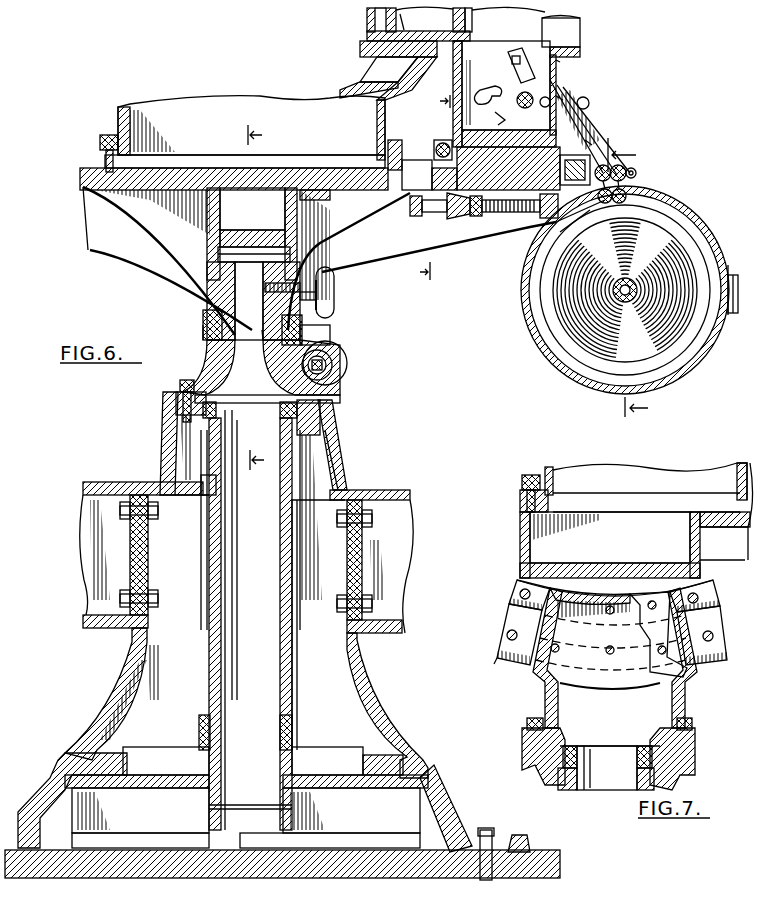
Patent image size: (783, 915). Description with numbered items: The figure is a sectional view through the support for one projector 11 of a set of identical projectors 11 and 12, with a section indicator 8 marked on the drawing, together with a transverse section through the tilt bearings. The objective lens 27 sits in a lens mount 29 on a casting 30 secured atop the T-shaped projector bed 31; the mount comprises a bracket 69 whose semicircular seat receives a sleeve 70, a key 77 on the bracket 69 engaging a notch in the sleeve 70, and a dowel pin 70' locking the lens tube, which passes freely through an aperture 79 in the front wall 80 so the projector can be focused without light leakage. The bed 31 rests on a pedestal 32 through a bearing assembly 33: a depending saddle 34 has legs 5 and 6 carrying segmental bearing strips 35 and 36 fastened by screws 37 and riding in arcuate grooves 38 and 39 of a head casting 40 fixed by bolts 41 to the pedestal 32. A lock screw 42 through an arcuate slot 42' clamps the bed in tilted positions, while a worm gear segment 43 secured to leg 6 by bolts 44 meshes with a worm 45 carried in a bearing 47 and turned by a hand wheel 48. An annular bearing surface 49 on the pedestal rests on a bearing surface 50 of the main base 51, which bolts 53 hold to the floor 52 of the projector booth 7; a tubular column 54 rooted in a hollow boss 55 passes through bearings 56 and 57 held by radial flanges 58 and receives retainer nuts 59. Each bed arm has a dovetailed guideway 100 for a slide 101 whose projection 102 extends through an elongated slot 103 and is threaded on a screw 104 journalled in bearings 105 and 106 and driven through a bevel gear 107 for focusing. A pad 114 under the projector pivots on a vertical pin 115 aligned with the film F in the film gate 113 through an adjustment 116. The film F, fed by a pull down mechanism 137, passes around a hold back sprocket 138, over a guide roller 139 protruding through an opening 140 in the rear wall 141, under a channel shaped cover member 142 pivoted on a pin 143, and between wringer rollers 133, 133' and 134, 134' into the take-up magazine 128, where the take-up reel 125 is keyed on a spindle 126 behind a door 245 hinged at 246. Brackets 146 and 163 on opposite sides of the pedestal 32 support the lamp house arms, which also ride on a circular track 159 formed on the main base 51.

In FIG. 6, the saddle leg 5 is at (203, 333).
In FIG. 7, the saddle leg 5 is at (500, 654).
In FIG. 6, the saddle leg 6 is at (275, 338).
In FIG. 6, the projector booth 7 is at (261, 297).
In FIG. 6, the section line 8 is at (429, 186).
In FIG. 6, the projector 11 is at (570, 78).
In FIG. 6, the projector 12 is at (638, 277).
In FIG. 6, the objective lens 27 is at (367, 14).
In FIG. 6, the lens mount 29 is at (364, 58).
In FIG. 6, the casting 30 is at (343, 132).
In FIG. 7, the casting 30 is at (747, 482).
In FIG. 6, the projector bed 31 is at (84, 190).
In FIG. 7, the projector bed 31 is at (742, 560).
In FIG. 6, the pedestal 32 is at (162, 448).
In FIG. 7, the pedestal 32 is at (697, 762).
In FIG. 7, the bearing assembly 33 is at (728, 624).
In FIG. 6, the saddle 34 is at (306, 262).
In FIG. 7, the saddle 34 is at (512, 579).
In FIG. 6, the segmental bearing strip 35 is at (207, 280).
In FIG. 7, the segmental bearing strip 35 is at (512, 596).
In FIG. 6, the segmental bearing strip 36 is at (203, 322).
In FIG. 7, the segmental bearing strip 36 is at (502, 633).
In FIG. 6, the screws 37 is at (207, 258).
In FIG. 7, the screws 37 is at (527, 612).
In FIG. 6, the arcuate bearing groove 38 is at (262, 272).
In FIG. 7, the arcuate bearing groove 38 is at (655, 615).
In FIG. 6, the arcuate bearing groove 39 is at (270, 300).
In FIG. 7, the arcuate bearing groove 39 is at (640, 640).
In FIG. 6, the head casting 40 is at (222, 358).
In FIG. 7, the head casting 40 is at (545, 690).
In FIG. 6, the bolts 41 is at (180, 384).
In FIG. 7, the bolts 41 is at (527, 722).
In FIG. 6, the lock screw 42 is at (338, 292).
In FIG. 6, the arcuate slot 42' is at (330, 295).
In FIG. 6, the worm gear segment 43 is at (345, 350).
In FIG. 6, the bolts 44 is at (330, 330).
In FIG. 6, the worm 45 is at (332, 368).
In FIG. 6, the bearing 47 is at (335, 380).
In FIG. 6, the hand wheel 48 is at (347, 358).
In FIG. 6, the annular bearing surface 49 is at (392, 789).
In FIG. 6, the bearing surface 50 is at (365, 765).
In FIG. 6, the main base 51 is at (440, 812).
In FIG. 6, the floor 52 is at (540, 856).
In FIG. 6, the bolts 53 is at (494, 830).
In FIG. 6, the tubular column 54 is at (292, 690).
In FIG. 7, the tubular column 54 is at (590, 749).
In FIG. 6, the hollow boss 55 is at (292, 812).
In FIG. 6, the bearing 56 is at (292, 730).
In FIG. 6, the bearing 57 is at (295, 462).
In FIG. 7, the bearing 57 is at (565, 782).
In FIG. 6, the radially extending flanges 58 is at (158, 660).
In FIG. 6, the retainer nuts 59 is at (230, 406).
In FIG. 7, the retainer nuts 59 is at (650, 740).
In FIG. 6, the bracket 69 is at (362, 80).
In FIG. 6, the sleeve 70 is at (403, 33).
In FIG. 6, the dowel pin 70' is at (413, 20).
In FIG. 6, the key 77 is at (410, 58).
In FIG. 6, the aperture 79 is at (462, 45).
In FIG. 6, the front wall 80 is at (446, 94).
In FIG. 6, the dovetailed guideway 100 is at (396, 158).
In FIG. 6, the slide 101 is at (405, 184).
In FIG. 6, the depending projection 102 is at (505, 232).
In FIG. 6, the elongated slot 103 is at (498, 214).
In FIG. 6, the screw 104 is at (542, 218).
In FIG. 6, the bearing 105 is at (414, 217).
In FIG. 6, the bearing 106 is at (574, 224).
In FIG. 6, the bevel gear 107 is at (452, 220).
In FIG. 6, the film gate 113 is at (580, 32).
In FIG. 6, the pad 114 is at (496, 116).
In FIG. 6, the vertical pin 115 is at (523, 165).
In FIG. 6, the adjustment 116 is at (437, 134).
In FIG. 6, the take-up reel 125 is at (695, 250).
In FIG. 6, the spindle 126 is at (630, 280).
In FIG. 6, the take-up magazine 128 is at (548, 352).
In FIG. 6, the wringer roller 133 is at (634, 164).
In FIG. 6, the wringer roller 133' is at (643, 170).
In FIG. 6, the wringer roller 134 is at (614, 200).
In FIG. 6, the wringer roller 134' is at (638, 200).
In FIG. 6, the pull down mechanism 137 is at (502, 72).
In FIG. 6, the hold back sprocket 138 is at (480, 98).
In FIG. 6, the guide roller 139 is at (568, 93).
In FIG. 6, the opening 140 is at (545, 107).
In FIG. 6, the rear wall 141 is at (560, 60).
In FIG. 6, the channel shaped cover member 142 is at (597, 118).
In FIG. 6, the pin 143 is at (636, 176).
In FIG. 6, the bracket 146 is at (108, 482).
In FIG. 6, the track 159 is at (530, 840).
In FIG. 6, the bracket 163 is at (380, 492).
In FIG. 6, the door 245 is at (724, 258).
In FIG. 6, the hinge 246 is at (736, 276).
In FIG. 6, the film F is at (586, 112).